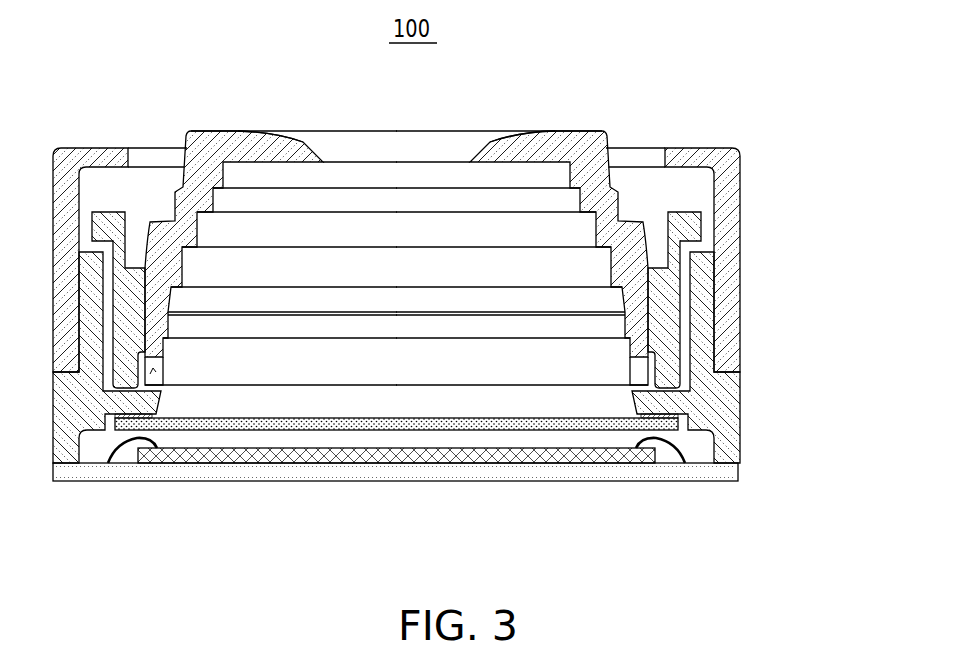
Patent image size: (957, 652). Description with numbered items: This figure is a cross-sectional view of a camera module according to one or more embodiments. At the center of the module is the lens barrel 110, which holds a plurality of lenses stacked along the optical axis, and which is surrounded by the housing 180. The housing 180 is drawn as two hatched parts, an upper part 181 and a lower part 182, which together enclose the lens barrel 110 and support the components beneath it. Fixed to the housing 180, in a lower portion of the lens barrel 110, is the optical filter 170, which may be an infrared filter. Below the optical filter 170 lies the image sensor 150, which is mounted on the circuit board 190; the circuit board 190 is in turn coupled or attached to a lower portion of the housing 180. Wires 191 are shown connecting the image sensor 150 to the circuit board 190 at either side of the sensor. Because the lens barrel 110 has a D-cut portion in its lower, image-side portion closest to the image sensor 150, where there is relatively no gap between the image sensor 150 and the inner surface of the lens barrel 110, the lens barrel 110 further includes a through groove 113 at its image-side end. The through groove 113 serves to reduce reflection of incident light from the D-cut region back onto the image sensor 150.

The lens barrel 110 is at (573, 131).
The through groove 113 is at (155, 372).
The image sensor 150 is at (576, 458).
The optical filter 170 is at (498, 432).
The housing 180 is at (462, 305).
The upper housing 181 is at (736, 332).
The lower housing 182 is at (736, 403).
The circuit board 190 is at (736, 473).
The wire 191 is at (655, 452).